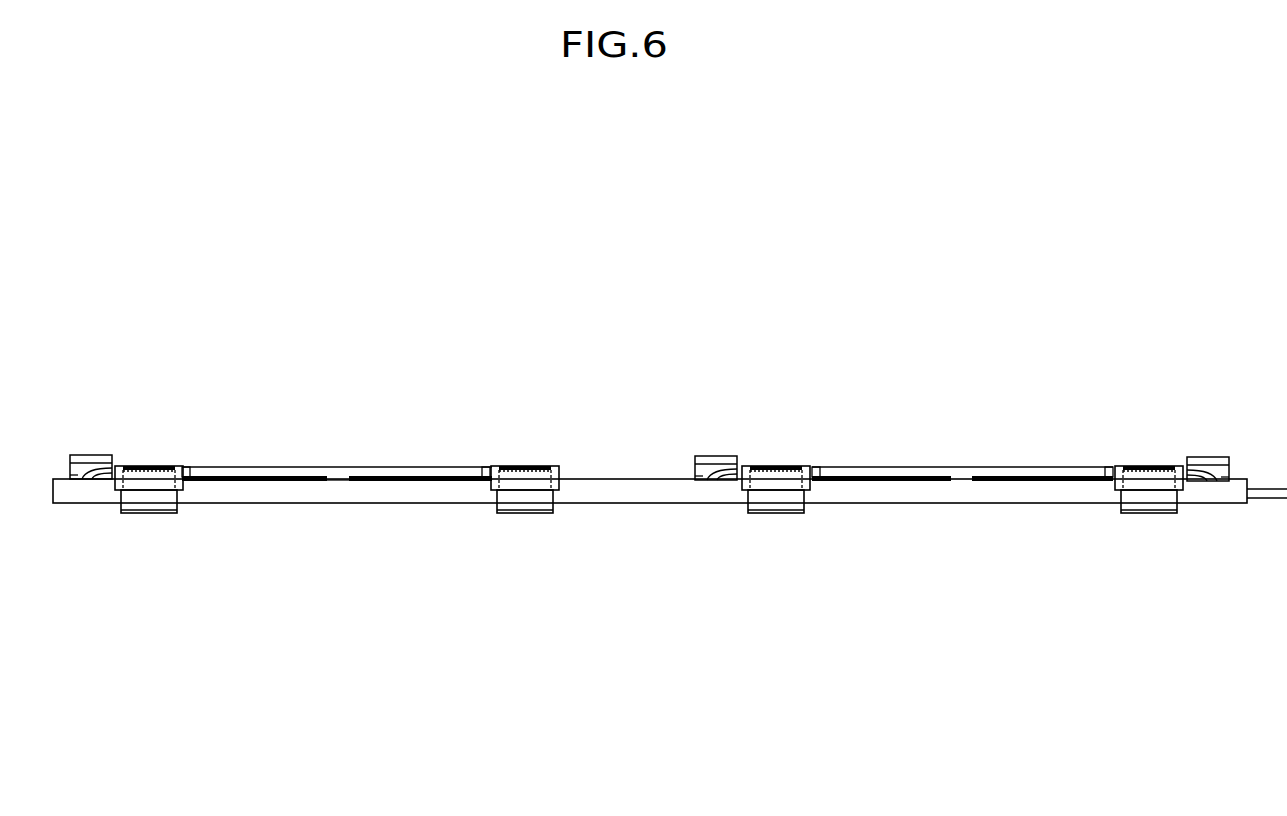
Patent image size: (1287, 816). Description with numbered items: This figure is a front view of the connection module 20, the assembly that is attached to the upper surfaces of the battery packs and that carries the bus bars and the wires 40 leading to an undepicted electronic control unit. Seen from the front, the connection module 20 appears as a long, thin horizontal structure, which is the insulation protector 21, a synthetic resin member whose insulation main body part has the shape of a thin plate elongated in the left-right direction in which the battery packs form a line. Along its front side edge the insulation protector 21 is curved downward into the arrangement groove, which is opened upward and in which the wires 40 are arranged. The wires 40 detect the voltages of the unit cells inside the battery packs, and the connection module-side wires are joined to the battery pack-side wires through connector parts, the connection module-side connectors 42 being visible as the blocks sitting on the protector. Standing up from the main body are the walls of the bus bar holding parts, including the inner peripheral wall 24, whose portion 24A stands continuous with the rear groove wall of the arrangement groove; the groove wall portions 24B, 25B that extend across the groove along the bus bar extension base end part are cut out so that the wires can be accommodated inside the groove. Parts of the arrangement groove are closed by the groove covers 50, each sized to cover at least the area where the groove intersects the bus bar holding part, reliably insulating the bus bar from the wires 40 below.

The connection module 20 is at (1018, 266).
The insulation protector 21 is at (83, 522).
The inner peripheral wall 24 is at (517, 365).
The portion of the inner peripheral wall 24A is at (420, 475).
The groove wall portion 24B is at (487, 473).
The groove wall portion 25B is at (563, 477).
The wires 40 is at (1267, 488).
The connection module-side connector 42 is at (705, 458).
The groove cover 50 is at (365, 477).